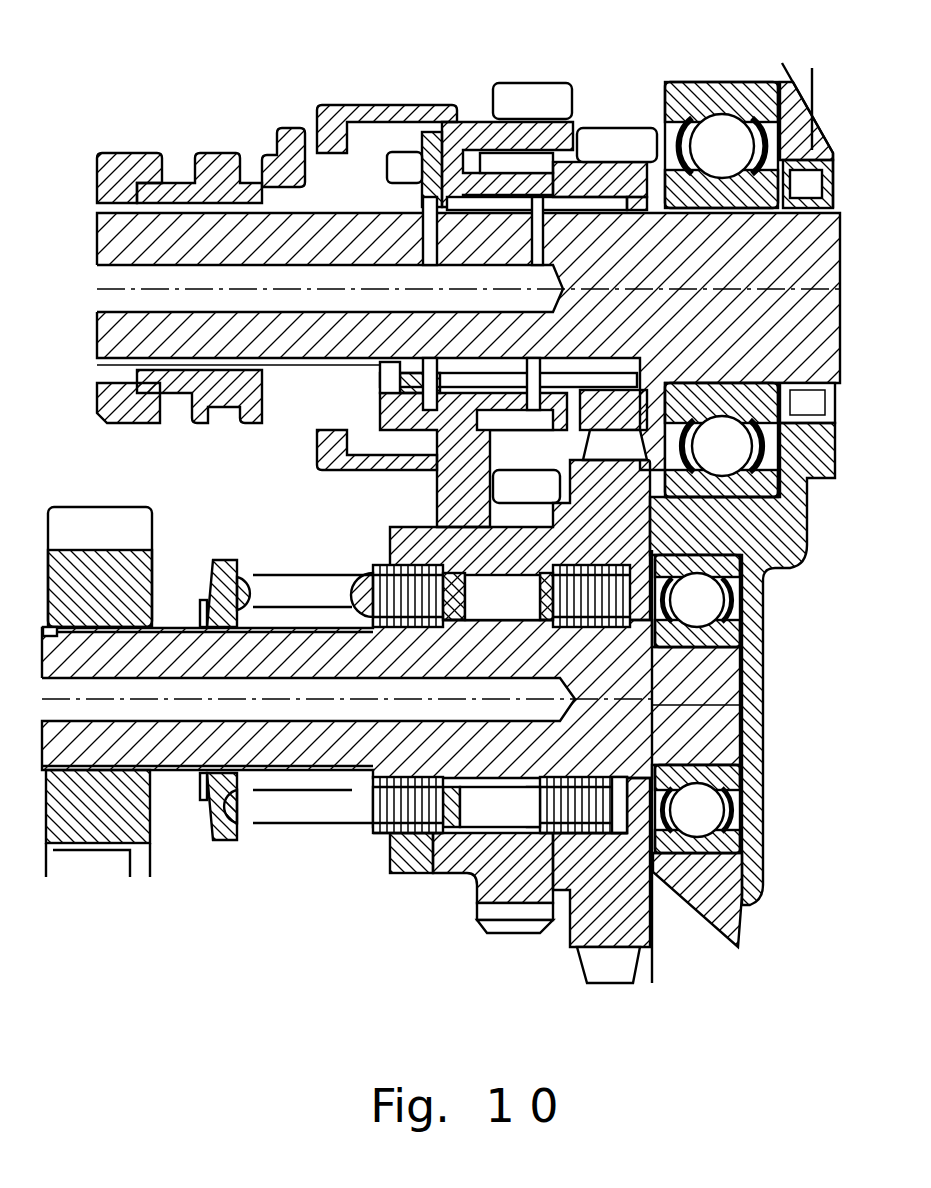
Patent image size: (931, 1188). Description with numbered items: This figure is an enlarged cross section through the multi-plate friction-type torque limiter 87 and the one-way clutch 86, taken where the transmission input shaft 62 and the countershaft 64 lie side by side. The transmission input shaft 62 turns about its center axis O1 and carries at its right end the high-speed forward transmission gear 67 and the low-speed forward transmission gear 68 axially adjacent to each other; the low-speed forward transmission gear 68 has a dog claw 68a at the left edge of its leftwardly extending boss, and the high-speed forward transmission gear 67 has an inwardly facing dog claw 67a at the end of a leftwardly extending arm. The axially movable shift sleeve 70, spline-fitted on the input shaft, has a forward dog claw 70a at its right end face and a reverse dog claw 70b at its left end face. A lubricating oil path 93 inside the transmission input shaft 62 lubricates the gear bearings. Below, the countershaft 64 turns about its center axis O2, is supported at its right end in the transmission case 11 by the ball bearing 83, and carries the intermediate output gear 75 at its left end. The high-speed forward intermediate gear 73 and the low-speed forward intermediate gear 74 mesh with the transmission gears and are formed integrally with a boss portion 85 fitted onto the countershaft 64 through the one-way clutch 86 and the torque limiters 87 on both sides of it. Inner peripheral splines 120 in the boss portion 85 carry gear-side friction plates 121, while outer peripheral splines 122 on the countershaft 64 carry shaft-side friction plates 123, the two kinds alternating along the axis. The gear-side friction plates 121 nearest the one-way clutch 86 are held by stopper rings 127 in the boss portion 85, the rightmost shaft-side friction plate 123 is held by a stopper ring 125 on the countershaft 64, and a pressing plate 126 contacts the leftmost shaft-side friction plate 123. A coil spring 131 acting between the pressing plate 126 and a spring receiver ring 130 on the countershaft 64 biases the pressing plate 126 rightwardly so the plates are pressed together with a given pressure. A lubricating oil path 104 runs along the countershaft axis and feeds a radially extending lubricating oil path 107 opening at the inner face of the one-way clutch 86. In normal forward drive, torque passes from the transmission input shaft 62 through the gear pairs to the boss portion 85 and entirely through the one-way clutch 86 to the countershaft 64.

The reverse dog claw 70b is at (124, 168).
The shift sleeve 70 is at (218, 170).
The forward dog claw 70a is at (284, 148).
The dog claw 67a is at (331, 137).
The high-speed forward transmission gear 67 is at (505, 87).
The dog claw 68a is at (405, 158).
The low-speed forward transmission gear 68 is at (602, 128).
The transmission input shaft 62 is at (280, 256).
The lubricating oil path 93 is at (473, 306).
The center axis O1 is at (293, 330).
The intermediate output gear 75 is at (88, 523).
The countershaft 64 is at (185, 643).
The inner peripheral splines 120 is at (400, 555).
The gear-side friction plates 121 is at (410, 568).
The outer peripheral splines 122 is at (360, 612).
The shaft-side friction plates 123 is at (406, 626).
The lubricating oil path 107 is at (505, 626).
The lubricating oil path 104 is at (290, 708).
The one-way clutch 86 is at (483, 797).
The boss portion 85 is at (508, 847).
The stopper ring 125 is at (618, 777).
The transmission case 11 is at (755, 602).
The ball bearing 83 is at (758, 630).
The center axis O2 is at (690, 749).
The spring receiver ring 130 is at (215, 836).
The coil spring 131 is at (283, 826).
The pressing plate 126 is at (378, 838).
The stopper rings 127 is at (423, 874).
The torque limiter 87 is at (378, 848).
The high-speed forward intermediate gear 73 is at (476, 916).
The low-speed forward intermediate gear 74 is at (580, 966).